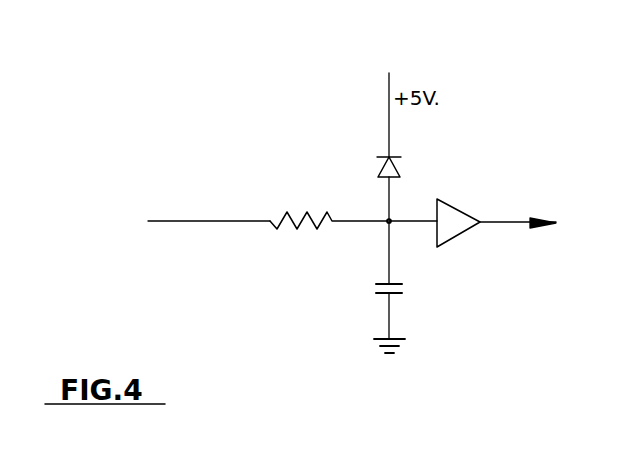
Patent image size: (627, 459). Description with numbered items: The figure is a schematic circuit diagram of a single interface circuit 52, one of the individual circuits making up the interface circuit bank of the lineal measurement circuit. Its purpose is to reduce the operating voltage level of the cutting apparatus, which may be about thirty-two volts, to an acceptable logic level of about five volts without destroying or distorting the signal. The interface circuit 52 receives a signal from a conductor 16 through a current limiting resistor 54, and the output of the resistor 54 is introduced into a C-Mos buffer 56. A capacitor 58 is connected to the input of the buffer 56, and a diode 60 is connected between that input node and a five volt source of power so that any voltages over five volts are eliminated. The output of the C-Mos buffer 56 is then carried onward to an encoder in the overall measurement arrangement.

The conductor 16 is at (208, 221).
The interface circuit 52 is at (233, 111).
The current limiting resistor 54 is at (292, 212).
The C-Mos buffer 56 is at (455, 210).
The capacitor 58 is at (380, 286).
The diode 60 is at (384, 167).